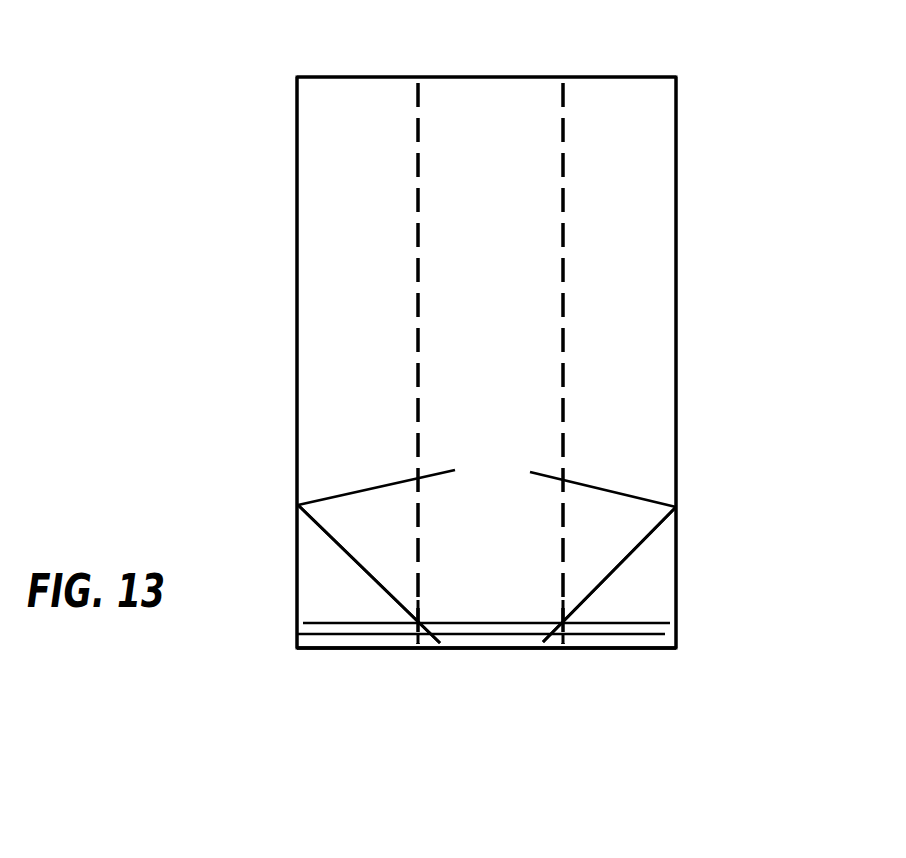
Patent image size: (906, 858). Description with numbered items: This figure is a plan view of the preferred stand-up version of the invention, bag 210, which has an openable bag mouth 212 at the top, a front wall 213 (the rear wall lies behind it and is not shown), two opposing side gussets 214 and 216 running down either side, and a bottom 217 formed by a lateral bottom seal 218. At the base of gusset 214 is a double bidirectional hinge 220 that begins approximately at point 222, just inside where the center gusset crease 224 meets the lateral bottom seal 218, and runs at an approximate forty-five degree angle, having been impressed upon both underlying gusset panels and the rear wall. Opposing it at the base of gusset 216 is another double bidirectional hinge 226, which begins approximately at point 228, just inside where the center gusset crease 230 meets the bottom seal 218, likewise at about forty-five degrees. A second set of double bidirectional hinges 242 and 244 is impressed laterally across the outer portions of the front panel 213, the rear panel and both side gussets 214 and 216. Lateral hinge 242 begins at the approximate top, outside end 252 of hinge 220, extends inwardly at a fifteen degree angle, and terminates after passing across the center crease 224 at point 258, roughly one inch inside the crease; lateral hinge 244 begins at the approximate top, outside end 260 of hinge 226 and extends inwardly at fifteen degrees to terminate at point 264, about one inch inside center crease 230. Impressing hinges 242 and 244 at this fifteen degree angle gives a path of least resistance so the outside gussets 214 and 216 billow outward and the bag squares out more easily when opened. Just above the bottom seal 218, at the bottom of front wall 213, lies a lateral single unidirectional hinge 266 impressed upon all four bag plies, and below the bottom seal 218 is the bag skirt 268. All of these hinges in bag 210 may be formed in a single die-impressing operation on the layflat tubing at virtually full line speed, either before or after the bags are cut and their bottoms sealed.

The bag 210 is at (678, 237).
The openable bag mouth 212 is at (513, 76).
The front wall 213 is at (531, 261).
The side gusset 214 is at (330, 208).
The side gusset 216 is at (652, 323).
The bottom 217 is at (368, 652).
The lateral bottom seal 218 is at (625, 652).
The double bidirectional hinge 220 is at (347, 552).
The point 222 is at (425, 652).
The center gusset crease 224 is at (418, 383).
The double bidirectional hinge 226 is at (626, 556).
The point 228 is at (555, 650).
The center gusset crease 230 is at (563, 400).
The double bidirectional lateral hinge 242 is at (343, 493).
The double bidirectional lateral hinge 244 is at (643, 498).
The top outside end of hinge 252 is at (298, 505).
The point 258 is at (455, 458).
The top outside end of hinge 260 is at (676, 507).
The point 264 is at (535, 466).
The lateral single unidirectional hinge 266 is at (497, 652).
The bag skirt 268 is at (663, 640).